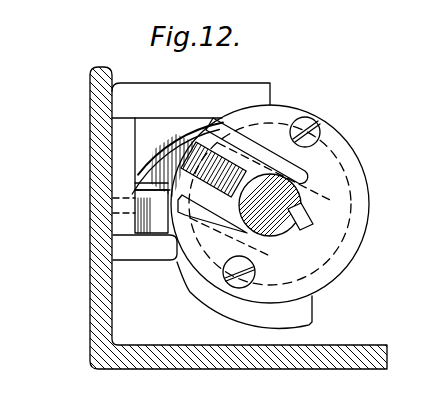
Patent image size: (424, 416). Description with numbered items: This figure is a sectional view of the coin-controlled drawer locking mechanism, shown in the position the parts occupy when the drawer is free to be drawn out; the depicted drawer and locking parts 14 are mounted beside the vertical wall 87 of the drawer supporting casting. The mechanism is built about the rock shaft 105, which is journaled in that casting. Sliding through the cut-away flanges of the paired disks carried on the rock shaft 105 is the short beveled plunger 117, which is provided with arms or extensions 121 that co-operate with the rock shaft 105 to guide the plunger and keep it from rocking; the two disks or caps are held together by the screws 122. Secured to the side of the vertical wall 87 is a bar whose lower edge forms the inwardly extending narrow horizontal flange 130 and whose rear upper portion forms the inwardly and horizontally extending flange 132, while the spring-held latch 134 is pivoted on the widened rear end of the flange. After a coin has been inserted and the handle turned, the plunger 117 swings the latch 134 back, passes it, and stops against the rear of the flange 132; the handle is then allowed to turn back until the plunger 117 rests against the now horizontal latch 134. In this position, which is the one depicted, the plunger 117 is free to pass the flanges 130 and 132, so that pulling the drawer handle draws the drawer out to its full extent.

The rotatable disc 14 is at (423, 212).
The vertical wall 87 is at (97, 328).
The rock shaft 105 is at (282, 199).
The plunger 117 is at (173, 197).
The arms or extensions 121 is at (320, 136).
The screws 122 is at (234, 266).
The horizontal flange 130 is at (158, 237).
The flange 132 is at (262, 95).
The latch 134 is at (134, 183).